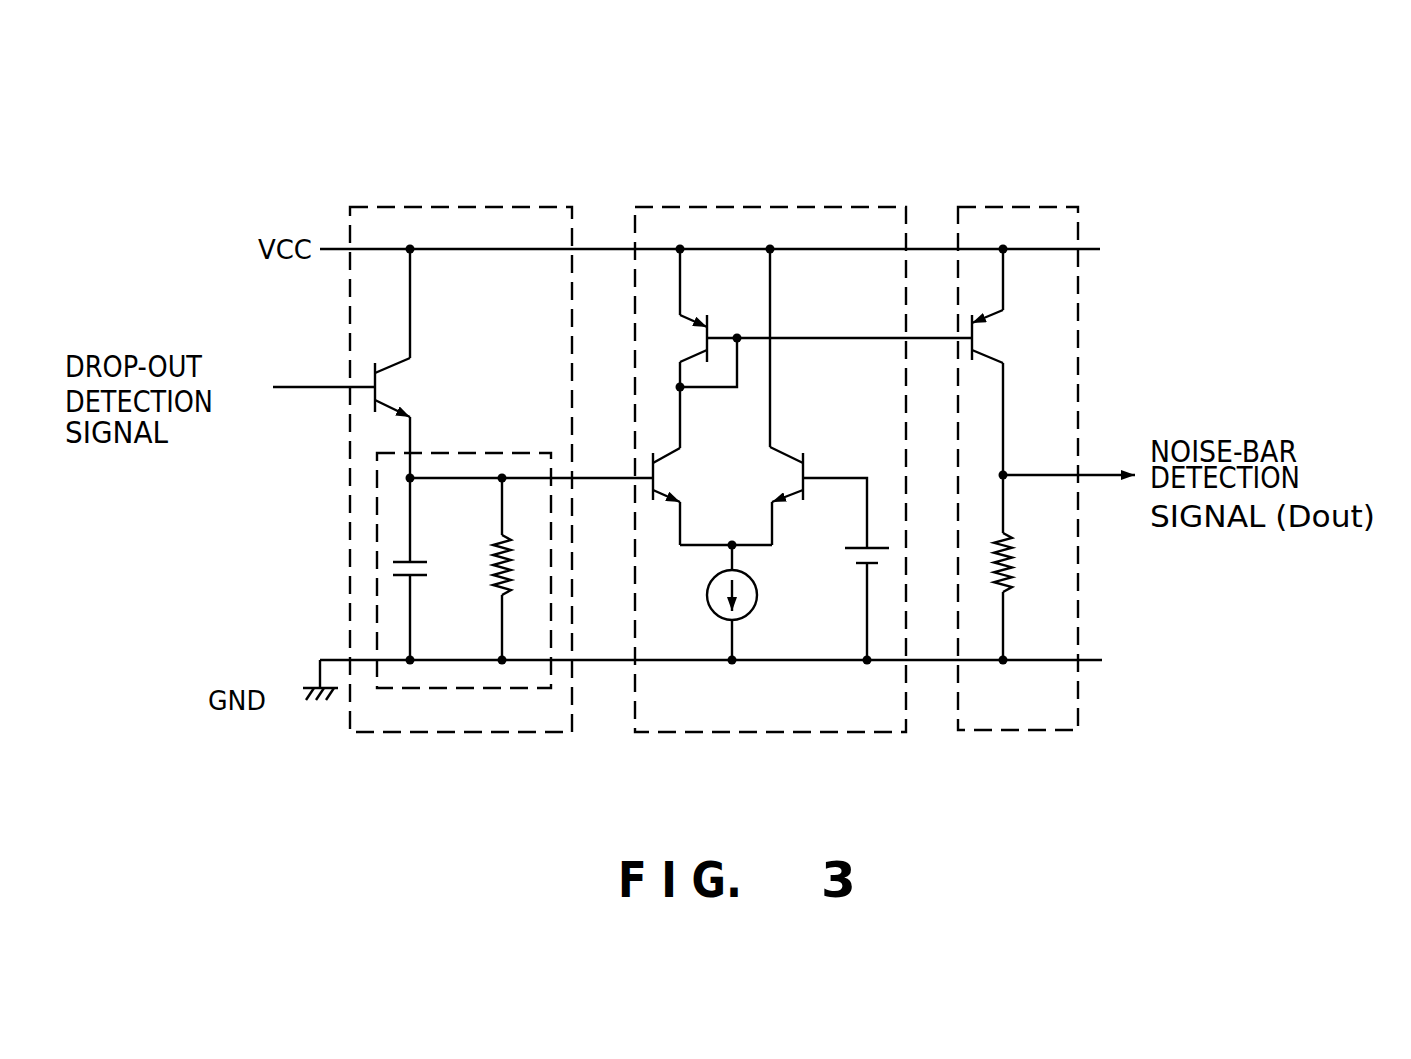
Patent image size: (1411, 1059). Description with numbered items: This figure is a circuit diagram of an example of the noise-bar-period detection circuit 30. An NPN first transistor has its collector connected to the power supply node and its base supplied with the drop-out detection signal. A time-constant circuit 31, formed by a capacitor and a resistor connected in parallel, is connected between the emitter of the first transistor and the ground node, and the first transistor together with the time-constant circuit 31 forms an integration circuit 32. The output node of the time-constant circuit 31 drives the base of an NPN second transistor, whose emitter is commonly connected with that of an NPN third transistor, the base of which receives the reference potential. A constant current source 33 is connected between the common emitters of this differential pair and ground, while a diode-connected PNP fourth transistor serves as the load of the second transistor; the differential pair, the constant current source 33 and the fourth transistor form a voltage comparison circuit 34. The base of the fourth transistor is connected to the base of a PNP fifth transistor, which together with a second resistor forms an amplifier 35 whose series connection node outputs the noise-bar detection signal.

The noise-bar-period detection circuit 30 is at (1065, 127).
The time-constant circuit 31 is at (468, 453).
The integration circuit 32 is at (452, 174).
The constant current source 33 is at (757, 605).
The voltage comparison circuit 34 is at (760, 207).
The amplifier 35 is at (986, 172).